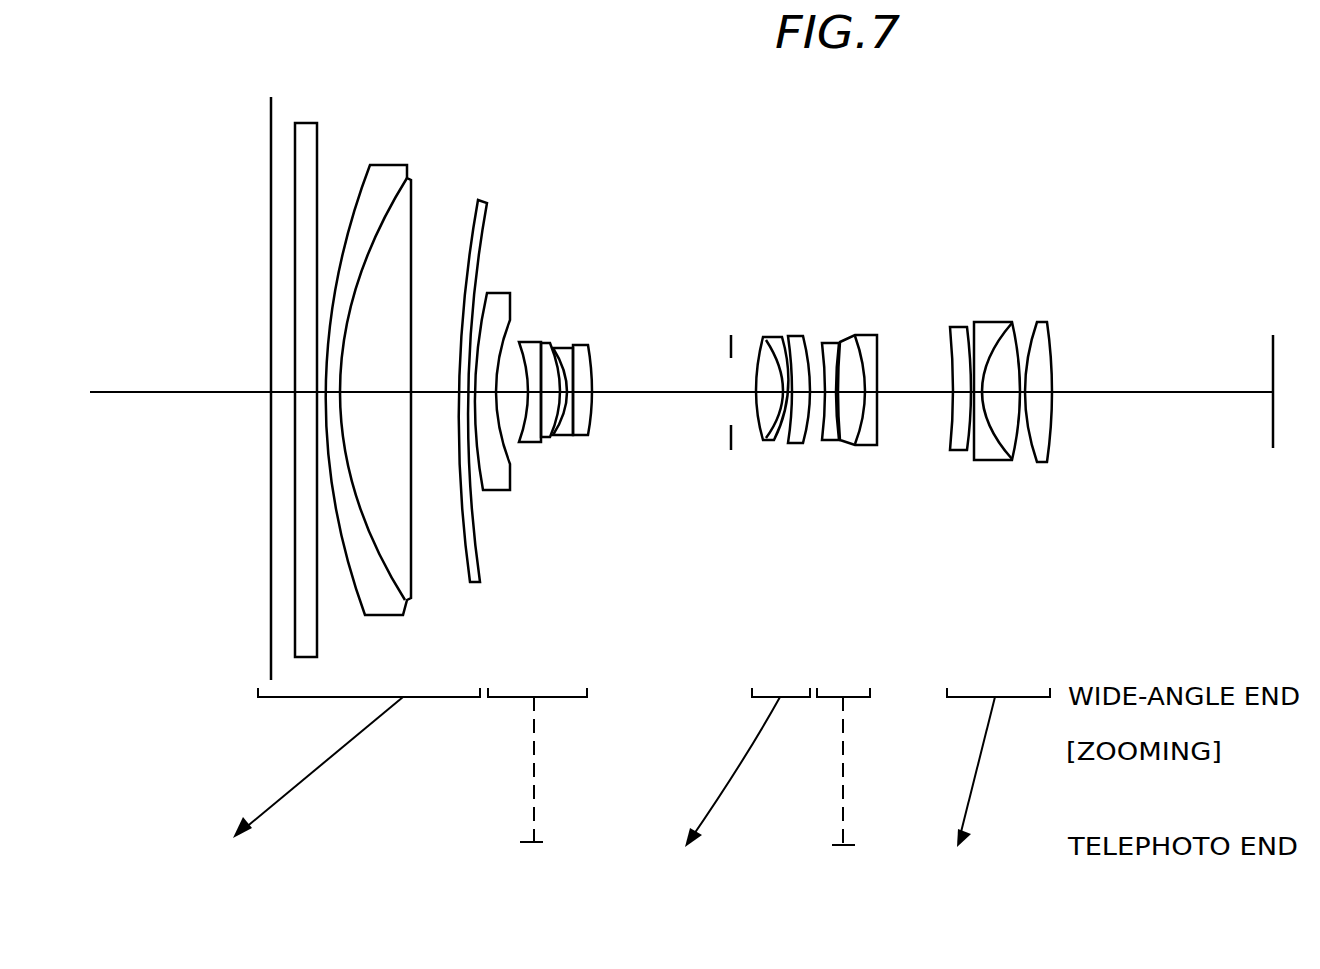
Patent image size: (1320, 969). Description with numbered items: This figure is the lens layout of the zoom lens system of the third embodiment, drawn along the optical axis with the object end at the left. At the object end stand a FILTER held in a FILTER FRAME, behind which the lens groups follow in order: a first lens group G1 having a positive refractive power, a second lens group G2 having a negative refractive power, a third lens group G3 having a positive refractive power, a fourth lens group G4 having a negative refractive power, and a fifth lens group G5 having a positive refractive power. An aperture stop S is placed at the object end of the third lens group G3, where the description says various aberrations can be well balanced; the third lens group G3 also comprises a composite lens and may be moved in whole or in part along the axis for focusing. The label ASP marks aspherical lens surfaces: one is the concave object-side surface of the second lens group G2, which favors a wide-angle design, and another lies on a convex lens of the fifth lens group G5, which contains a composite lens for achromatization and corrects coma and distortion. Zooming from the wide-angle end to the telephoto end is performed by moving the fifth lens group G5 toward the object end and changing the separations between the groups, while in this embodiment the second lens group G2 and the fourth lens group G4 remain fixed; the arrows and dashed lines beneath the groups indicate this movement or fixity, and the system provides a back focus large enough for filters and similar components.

The filter frame FILTER FRAME is at (268, 127).
The filter FILTER is at (350, 60).
The first lens group G1 is at (485, 118).
The second lens group G2 is at (590, 267).
The third lens group G3 is at (808, 265).
The fourth lens group G4 is at (875, 265).
The fifth lens group G5 is at (1050, 269).
The aperture stop S is at (728, 349).
The aspherical lens surface ASP is at (497, 490).